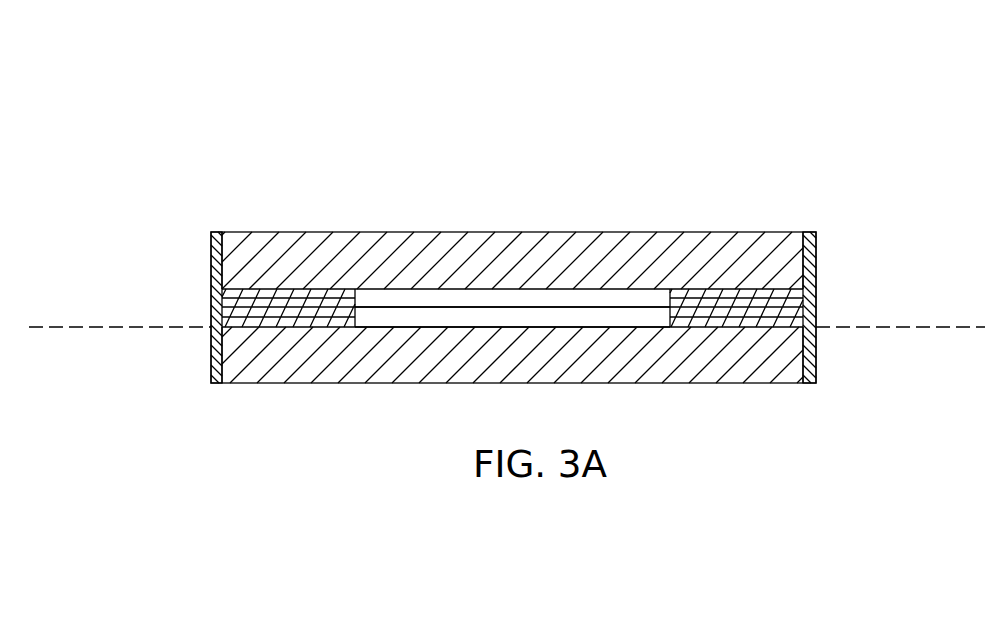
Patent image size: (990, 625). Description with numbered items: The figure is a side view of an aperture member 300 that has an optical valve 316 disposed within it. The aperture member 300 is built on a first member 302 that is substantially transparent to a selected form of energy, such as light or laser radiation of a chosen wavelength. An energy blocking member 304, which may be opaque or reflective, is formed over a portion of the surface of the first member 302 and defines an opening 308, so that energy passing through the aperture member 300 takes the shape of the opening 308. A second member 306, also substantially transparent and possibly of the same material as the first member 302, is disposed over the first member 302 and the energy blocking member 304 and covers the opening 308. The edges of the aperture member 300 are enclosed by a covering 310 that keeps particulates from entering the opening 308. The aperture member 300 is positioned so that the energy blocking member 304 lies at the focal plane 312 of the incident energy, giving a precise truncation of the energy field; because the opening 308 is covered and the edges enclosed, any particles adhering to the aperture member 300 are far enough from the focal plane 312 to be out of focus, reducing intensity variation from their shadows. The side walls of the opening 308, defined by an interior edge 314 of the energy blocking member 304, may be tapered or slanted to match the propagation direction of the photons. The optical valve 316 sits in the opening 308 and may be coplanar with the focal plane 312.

The aperture member 300 is at (792, 72).
The first member 302 is at (745, 383).
The energy blocking member 304 is at (240, 302).
The second member 306 is at (353, 232).
The opening 308 is at (532, 297).
The covering 310 is at (816, 296).
The focal plane 312 is at (933, 327).
The interior edge 314 is at (355, 320).
The optical valve 316 is at (595, 320).